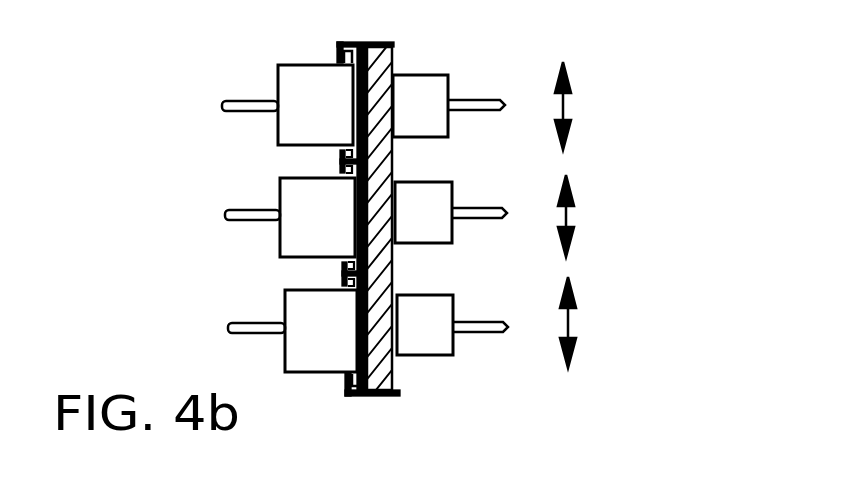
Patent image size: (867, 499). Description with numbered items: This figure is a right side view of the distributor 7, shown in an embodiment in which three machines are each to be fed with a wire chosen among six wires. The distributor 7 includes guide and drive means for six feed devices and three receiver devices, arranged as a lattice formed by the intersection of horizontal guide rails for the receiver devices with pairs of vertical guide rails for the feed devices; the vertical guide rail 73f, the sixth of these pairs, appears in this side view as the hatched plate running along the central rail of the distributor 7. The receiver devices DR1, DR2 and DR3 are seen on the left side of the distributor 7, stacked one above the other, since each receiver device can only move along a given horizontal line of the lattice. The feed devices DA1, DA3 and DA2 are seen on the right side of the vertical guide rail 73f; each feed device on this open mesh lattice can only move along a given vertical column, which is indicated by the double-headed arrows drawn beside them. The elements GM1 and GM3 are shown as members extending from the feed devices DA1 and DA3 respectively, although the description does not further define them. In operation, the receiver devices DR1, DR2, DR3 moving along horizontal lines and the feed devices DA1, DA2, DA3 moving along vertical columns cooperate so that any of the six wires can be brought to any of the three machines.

The distributor 7 is at (323, 58).
The vertical guide rail 73f is at (387, 397).
The receiver device DR1 is at (292, 331).
The receiver device DR2 is at (290, 217).
The receiver device DR3 is at (287, 105).
The feed device DA1 is at (416, 74).
The feed device DA3 is at (418, 237).
The feed device DA2 is at (418, 357).
The gear shaft / output member 1 GM1 is at (466, 113).
The gear shaft / output member 3 GM3 is at (465, 206).